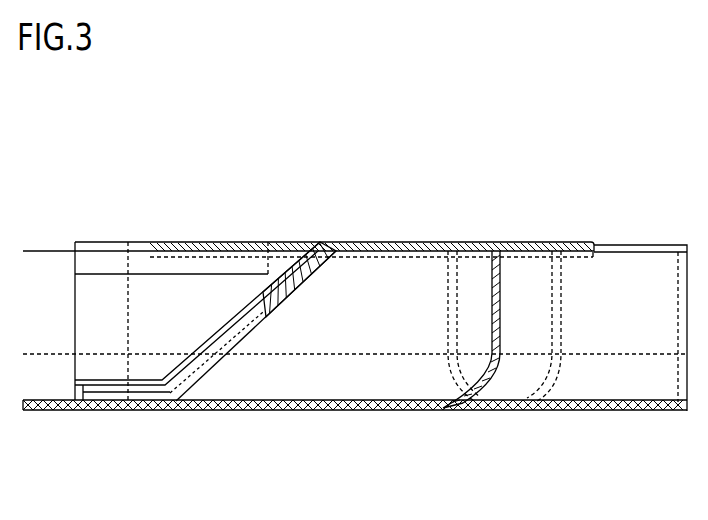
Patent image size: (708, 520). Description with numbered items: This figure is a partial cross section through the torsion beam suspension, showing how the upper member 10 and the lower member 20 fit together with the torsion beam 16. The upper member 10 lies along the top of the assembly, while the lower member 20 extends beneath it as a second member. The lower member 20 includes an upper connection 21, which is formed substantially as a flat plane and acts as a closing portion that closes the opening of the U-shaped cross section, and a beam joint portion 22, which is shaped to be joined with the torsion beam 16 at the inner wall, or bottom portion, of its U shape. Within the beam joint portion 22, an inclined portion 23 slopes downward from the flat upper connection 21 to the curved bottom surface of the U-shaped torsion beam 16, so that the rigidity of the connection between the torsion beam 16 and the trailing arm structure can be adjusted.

The upper member 10 is at (358, 410).
The torsion beam 16 is at (92, 410).
The lower member 20 is at (453, 220).
The upper connection 21 is at (378, 243).
The beam joint portion 22 is at (243, 198).
The inclined portion 23 is at (277, 243).